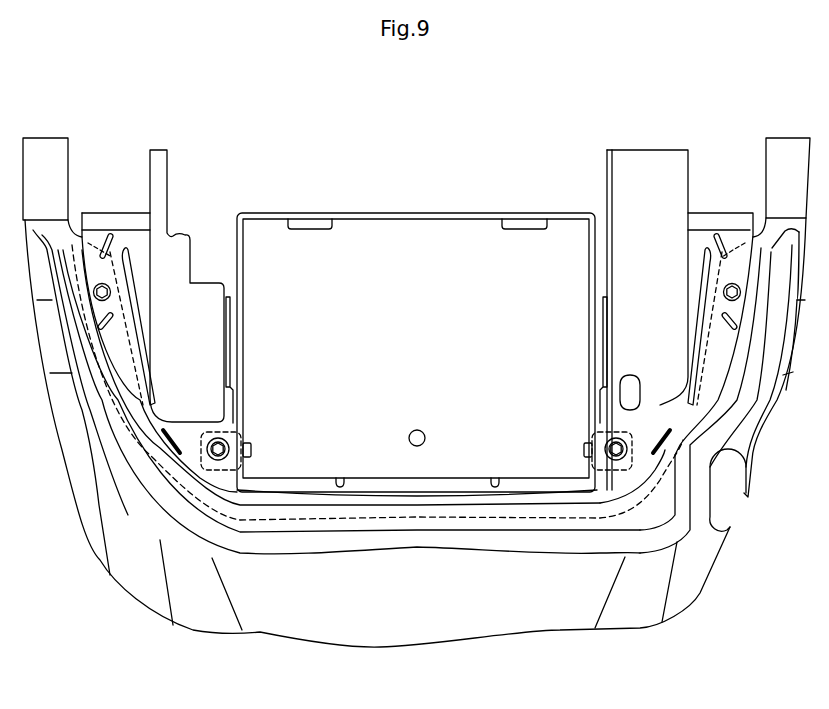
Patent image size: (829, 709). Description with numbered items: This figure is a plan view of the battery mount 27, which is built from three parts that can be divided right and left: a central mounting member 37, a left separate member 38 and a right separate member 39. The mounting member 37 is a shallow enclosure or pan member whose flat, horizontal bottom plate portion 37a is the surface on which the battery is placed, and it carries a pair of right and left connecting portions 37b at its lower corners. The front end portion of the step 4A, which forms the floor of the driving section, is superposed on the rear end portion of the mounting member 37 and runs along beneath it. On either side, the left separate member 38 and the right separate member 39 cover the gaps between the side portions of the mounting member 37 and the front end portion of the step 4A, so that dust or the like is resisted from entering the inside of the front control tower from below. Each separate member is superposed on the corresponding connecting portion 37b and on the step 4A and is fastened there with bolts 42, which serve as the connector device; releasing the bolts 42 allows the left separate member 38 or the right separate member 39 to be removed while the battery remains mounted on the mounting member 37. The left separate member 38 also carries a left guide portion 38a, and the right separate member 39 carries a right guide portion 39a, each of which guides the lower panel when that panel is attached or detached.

The step 4A is at (485, 617).
The battery mount 27 is at (387, 420).
The mounting member 37 is at (387, 212).
The bottom plate portion 37a is at (440, 257).
The connecting portion 37b is at (213, 423).
The left separate member 38 is at (157, 147).
The left guide portion 38a is at (105, 253).
The right separate member 39 is at (652, 147).
The right guide portion 39a is at (729, 253).
The bolt 42 is at (110, 290).